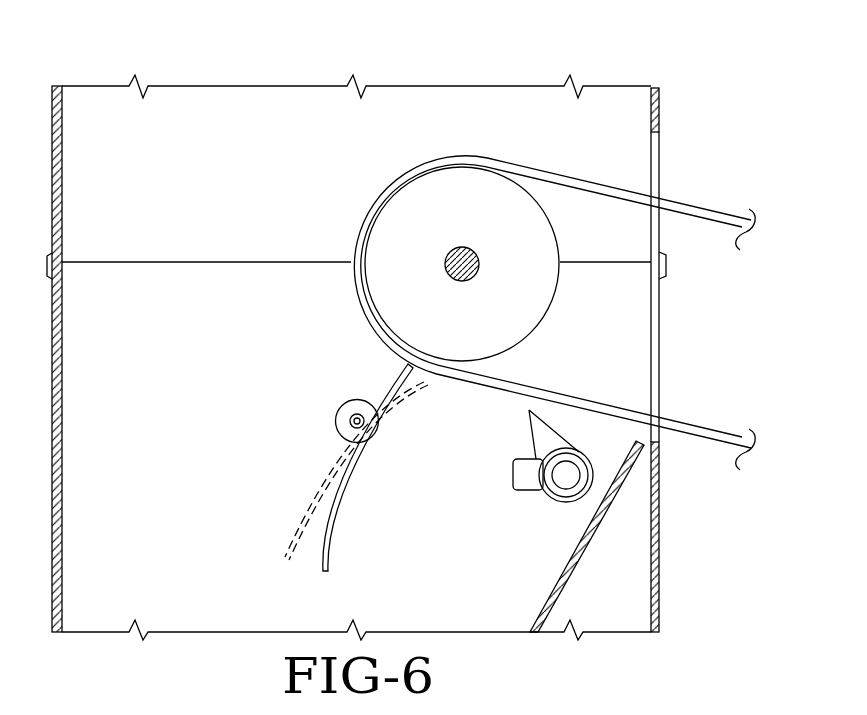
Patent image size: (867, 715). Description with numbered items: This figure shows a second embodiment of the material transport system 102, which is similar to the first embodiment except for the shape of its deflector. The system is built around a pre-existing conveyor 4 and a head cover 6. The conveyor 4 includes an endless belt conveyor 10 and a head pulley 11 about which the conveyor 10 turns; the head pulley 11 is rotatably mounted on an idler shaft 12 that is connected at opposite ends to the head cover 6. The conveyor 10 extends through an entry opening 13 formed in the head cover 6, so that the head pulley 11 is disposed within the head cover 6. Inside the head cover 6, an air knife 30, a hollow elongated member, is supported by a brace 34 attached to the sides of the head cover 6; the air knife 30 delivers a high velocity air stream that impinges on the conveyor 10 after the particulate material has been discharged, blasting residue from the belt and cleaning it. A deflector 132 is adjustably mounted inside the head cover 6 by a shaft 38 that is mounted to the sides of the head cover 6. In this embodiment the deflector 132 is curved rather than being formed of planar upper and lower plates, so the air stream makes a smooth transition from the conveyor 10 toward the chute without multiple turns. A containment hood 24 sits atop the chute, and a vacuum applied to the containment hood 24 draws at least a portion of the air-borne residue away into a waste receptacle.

The material transport system 102 is at (418, 320).
The containment hood 24 is at (660, 104).
The conveyor 10 is at (571, 311).
The conveyor 4 is at (724, 210).
The idler shaft 12 is at (470, 270).
The head pulley 11 is at (488, 271).
The entry opening 13 is at (655, 376).
The shaft 38 is at (361, 425).
The brace 34 is at (514, 471).
The deflector 132 is at (344, 503).
The air knife 30 is at (520, 477).
The head cover 6 is at (401, 357).